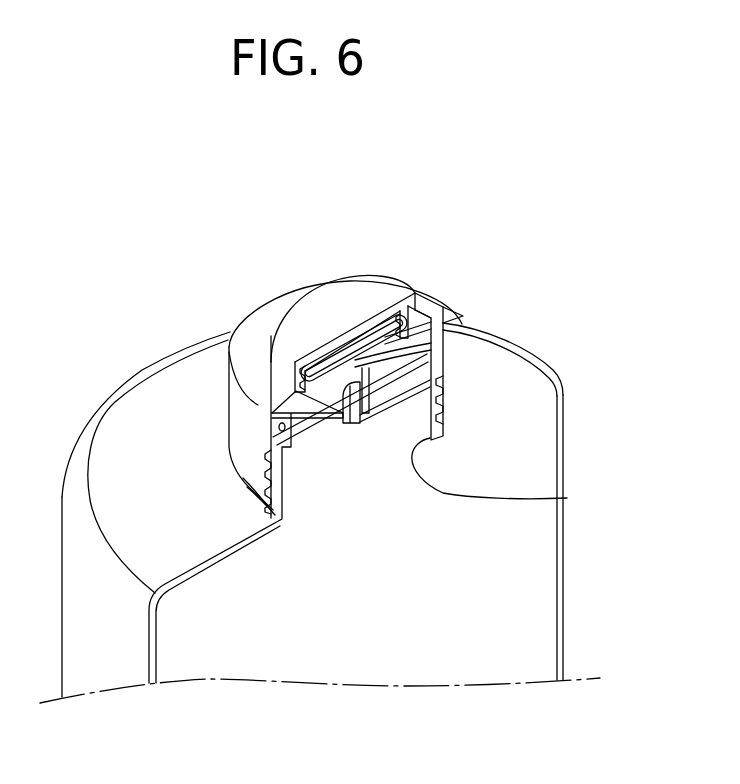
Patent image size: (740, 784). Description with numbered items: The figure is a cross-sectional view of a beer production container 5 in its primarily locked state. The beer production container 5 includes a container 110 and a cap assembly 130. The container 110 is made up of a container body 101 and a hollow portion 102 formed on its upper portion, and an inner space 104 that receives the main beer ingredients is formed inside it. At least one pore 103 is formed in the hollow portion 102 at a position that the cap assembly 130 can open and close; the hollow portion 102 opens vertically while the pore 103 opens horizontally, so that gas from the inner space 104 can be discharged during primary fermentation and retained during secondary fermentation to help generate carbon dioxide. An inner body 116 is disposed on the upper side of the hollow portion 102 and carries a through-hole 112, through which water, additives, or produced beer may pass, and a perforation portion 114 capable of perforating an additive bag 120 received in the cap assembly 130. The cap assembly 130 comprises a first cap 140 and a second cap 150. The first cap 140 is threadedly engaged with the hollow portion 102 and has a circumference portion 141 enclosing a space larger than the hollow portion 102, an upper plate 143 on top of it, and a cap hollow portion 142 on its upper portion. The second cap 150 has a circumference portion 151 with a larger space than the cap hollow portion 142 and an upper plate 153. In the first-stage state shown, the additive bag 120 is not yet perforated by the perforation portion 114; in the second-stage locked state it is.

The beer production container 5 is at (405, 158).
The container body 101 is at (560, 452).
The hollow portion 102 is at (428, 410).
The pore 103 is at (567, 498).
The inner space 104 is at (345, 527).
The container 110 is at (643, 410).
The through-hole 112 is at (275, 447).
The perforation portion 114 is at (343, 382).
The inner body 116 is at (257, 492).
The additive bag 120 is at (345, 364).
The cap assembly 130 is at (306, 258).
The first cap 140 is at (515, 225).
The circumference portion 141 is at (444, 368).
The cap hollow portion 142 is at (425, 300).
The upper plate 143 is at (462, 316).
The second cap 150 is at (268, 228).
The circumference portion 151 is at (226, 345).
The upper plate 153 is at (270, 334).